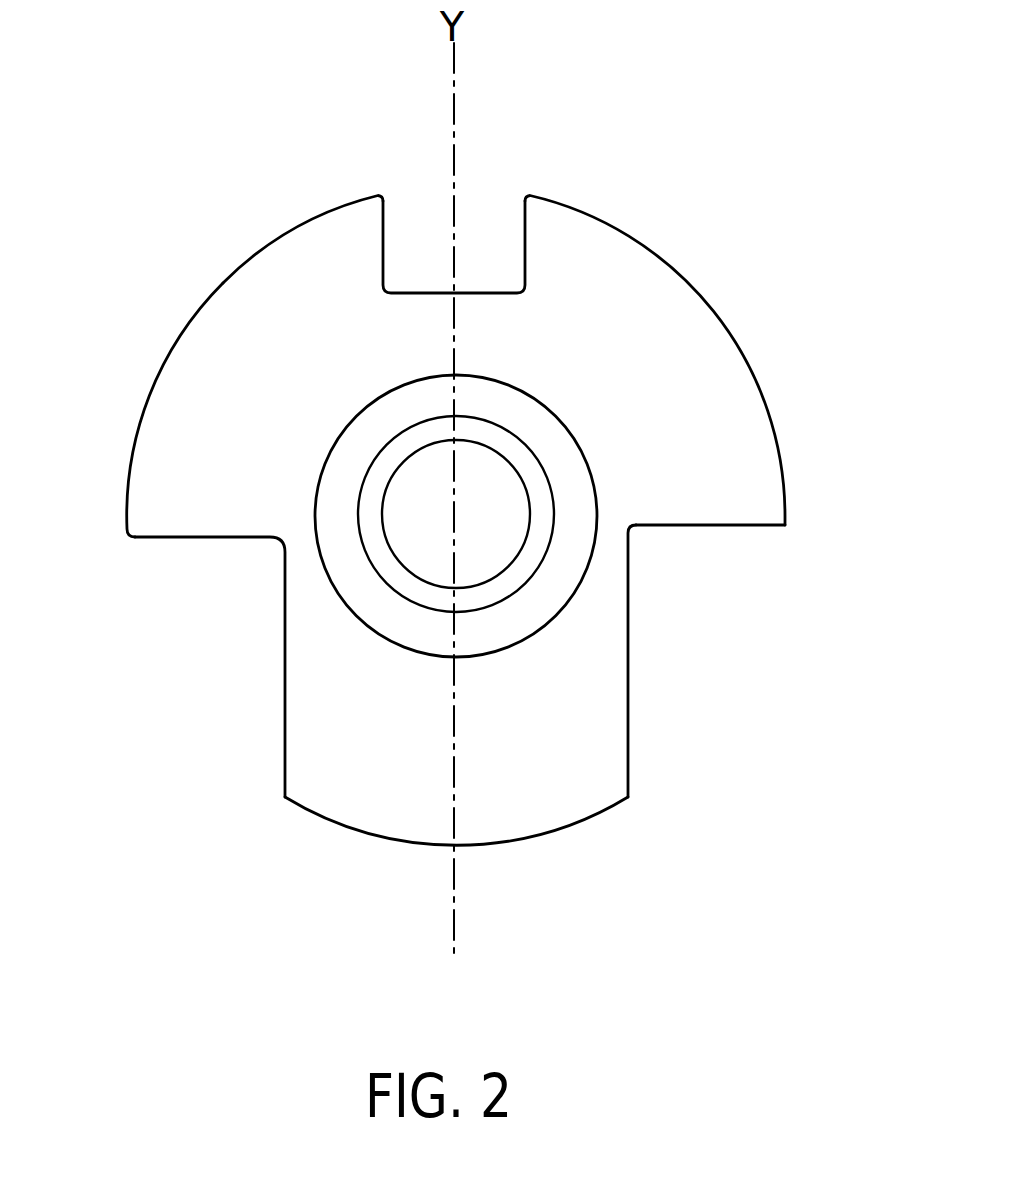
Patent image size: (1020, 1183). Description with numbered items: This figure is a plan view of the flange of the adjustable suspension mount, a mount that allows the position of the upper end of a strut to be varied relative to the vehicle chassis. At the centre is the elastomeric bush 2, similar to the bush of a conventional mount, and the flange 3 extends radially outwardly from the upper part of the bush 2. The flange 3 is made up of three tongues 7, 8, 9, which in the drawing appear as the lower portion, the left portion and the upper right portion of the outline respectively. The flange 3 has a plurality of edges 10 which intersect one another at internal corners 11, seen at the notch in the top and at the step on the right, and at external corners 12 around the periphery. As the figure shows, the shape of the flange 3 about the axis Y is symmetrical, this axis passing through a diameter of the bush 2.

The elastomeric bush 2 is at (537, 603).
The flange 3 is at (263, 292).
The tongue 7 is at (497, 810).
The tongue 8 is at (237, 470).
The tongue 9 is at (665, 302).
The edges 10 is at (284, 662).
The internal corners 11 is at (390, 288).
The external corners 12 is at (384, 196).